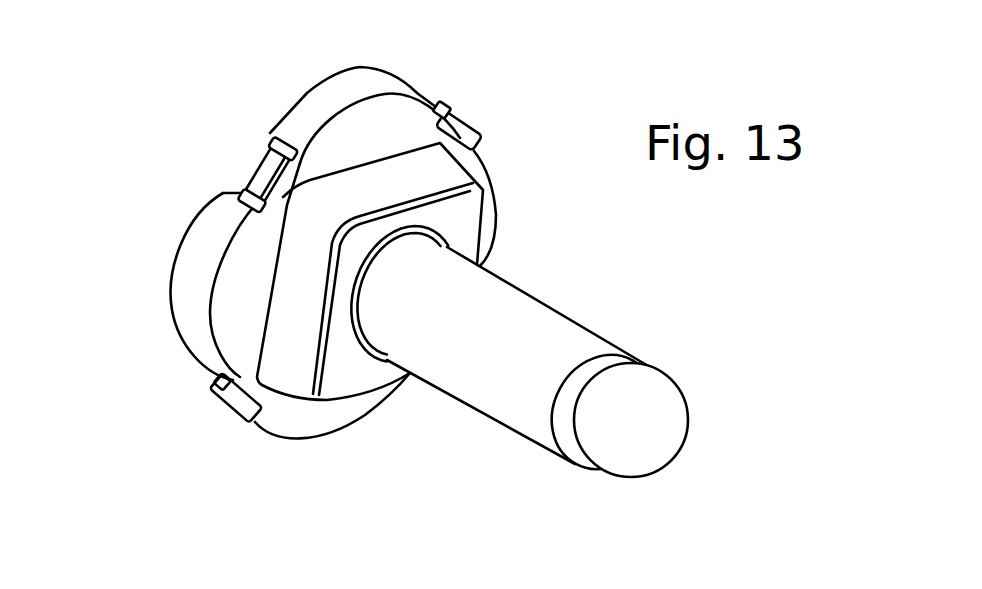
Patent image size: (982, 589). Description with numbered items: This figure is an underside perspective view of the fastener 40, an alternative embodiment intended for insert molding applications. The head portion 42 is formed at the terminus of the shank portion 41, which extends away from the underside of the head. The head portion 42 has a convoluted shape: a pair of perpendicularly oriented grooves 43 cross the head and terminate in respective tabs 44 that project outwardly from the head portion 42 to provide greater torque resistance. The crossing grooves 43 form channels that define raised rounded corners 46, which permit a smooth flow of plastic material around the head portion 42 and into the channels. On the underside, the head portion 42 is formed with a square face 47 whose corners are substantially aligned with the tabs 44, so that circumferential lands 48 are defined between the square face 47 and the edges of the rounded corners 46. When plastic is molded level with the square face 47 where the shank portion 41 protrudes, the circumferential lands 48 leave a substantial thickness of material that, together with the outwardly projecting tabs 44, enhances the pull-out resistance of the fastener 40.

The fastener 40 is at (213, 70).
The shank portion 41 is at (567, 330).
The head portion 42 is at (199, 449).
The grooves 43 is at (243, 157).
The tabs 44 is at (247, 193).
The raised rounded corners 46 is at (358, 67).
The square face 47 is at (473, 213).
The circumferential lands 48 is at (353, 137).